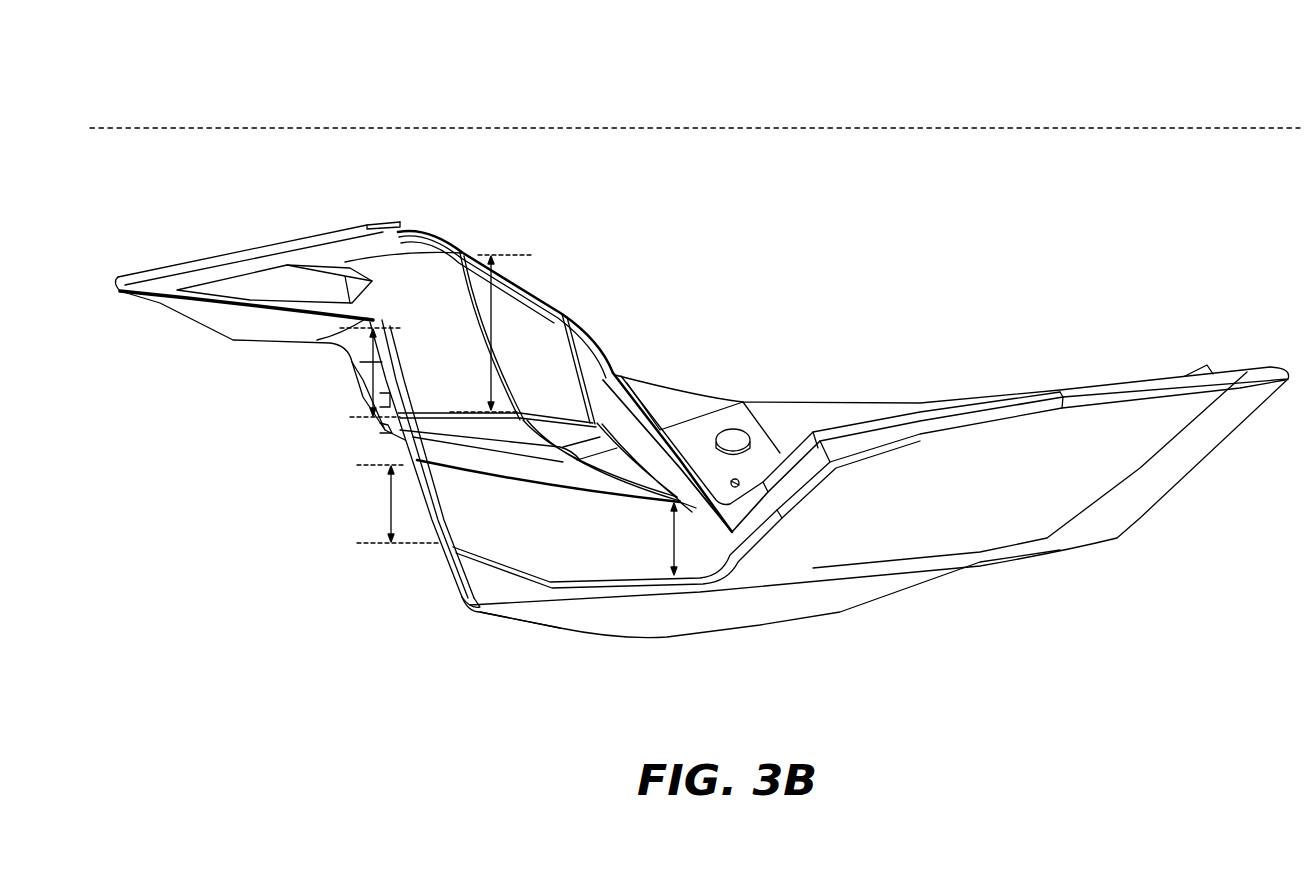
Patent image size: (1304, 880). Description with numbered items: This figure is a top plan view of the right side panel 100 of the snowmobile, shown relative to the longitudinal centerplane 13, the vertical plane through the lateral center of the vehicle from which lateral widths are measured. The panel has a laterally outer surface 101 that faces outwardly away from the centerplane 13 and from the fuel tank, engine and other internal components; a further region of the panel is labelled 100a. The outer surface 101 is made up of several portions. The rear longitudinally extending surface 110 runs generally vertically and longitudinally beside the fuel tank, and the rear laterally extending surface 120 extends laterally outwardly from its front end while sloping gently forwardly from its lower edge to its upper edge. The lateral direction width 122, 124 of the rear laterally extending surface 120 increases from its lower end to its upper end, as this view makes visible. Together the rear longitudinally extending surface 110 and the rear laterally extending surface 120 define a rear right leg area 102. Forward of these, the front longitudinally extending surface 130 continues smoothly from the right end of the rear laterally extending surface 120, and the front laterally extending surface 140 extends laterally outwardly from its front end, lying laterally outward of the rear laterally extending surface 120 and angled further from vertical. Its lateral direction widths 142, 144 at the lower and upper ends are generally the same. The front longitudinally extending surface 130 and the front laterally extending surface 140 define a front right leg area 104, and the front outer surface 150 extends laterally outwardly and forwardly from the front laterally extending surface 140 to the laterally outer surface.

The longitudinal centerplane 13 is at (281, 127).
The right side panel 100 is at (1042, 93).
The side surface of seat assembly 100a is at (1112, 465).
The laterally outer surface 101 is at (933, 499).
The rear right leg area 102 is at (248, 357).
The front right leg area 104 is at (542, 557).
The rear longitudinally extending surface 110 is at (310, 343).
The rear laterally extending surface 120 is at (452, 323).
The lateral direction width 122 is at (363, 380).
The lateral direction width 124 is at (493, 362).
The front longitudinally extending surface 130 is at (477, 465).
The front laterally extending surface 140 is at (617, 572).
The lateral direction width 142 is at (390, 497).
The lateral direction width 144 is at (675, 540).
The front outer surface 150 is at (490, 593).